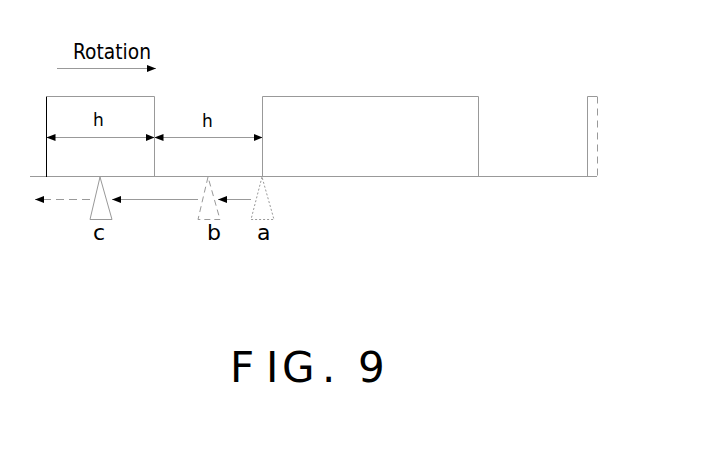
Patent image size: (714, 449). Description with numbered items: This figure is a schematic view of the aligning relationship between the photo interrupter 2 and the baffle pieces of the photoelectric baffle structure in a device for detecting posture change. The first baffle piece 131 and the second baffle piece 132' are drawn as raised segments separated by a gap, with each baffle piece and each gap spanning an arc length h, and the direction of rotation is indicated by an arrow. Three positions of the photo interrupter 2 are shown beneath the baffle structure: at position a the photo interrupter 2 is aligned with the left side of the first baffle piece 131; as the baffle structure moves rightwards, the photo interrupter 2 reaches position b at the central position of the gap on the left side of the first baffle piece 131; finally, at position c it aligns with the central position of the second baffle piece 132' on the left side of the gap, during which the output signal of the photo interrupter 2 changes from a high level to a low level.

The second baffle piece 132' is at (142, 91).
The first baffle piece 131 is at (363, 141).
The photo interrupter 2 is at (101, 215).